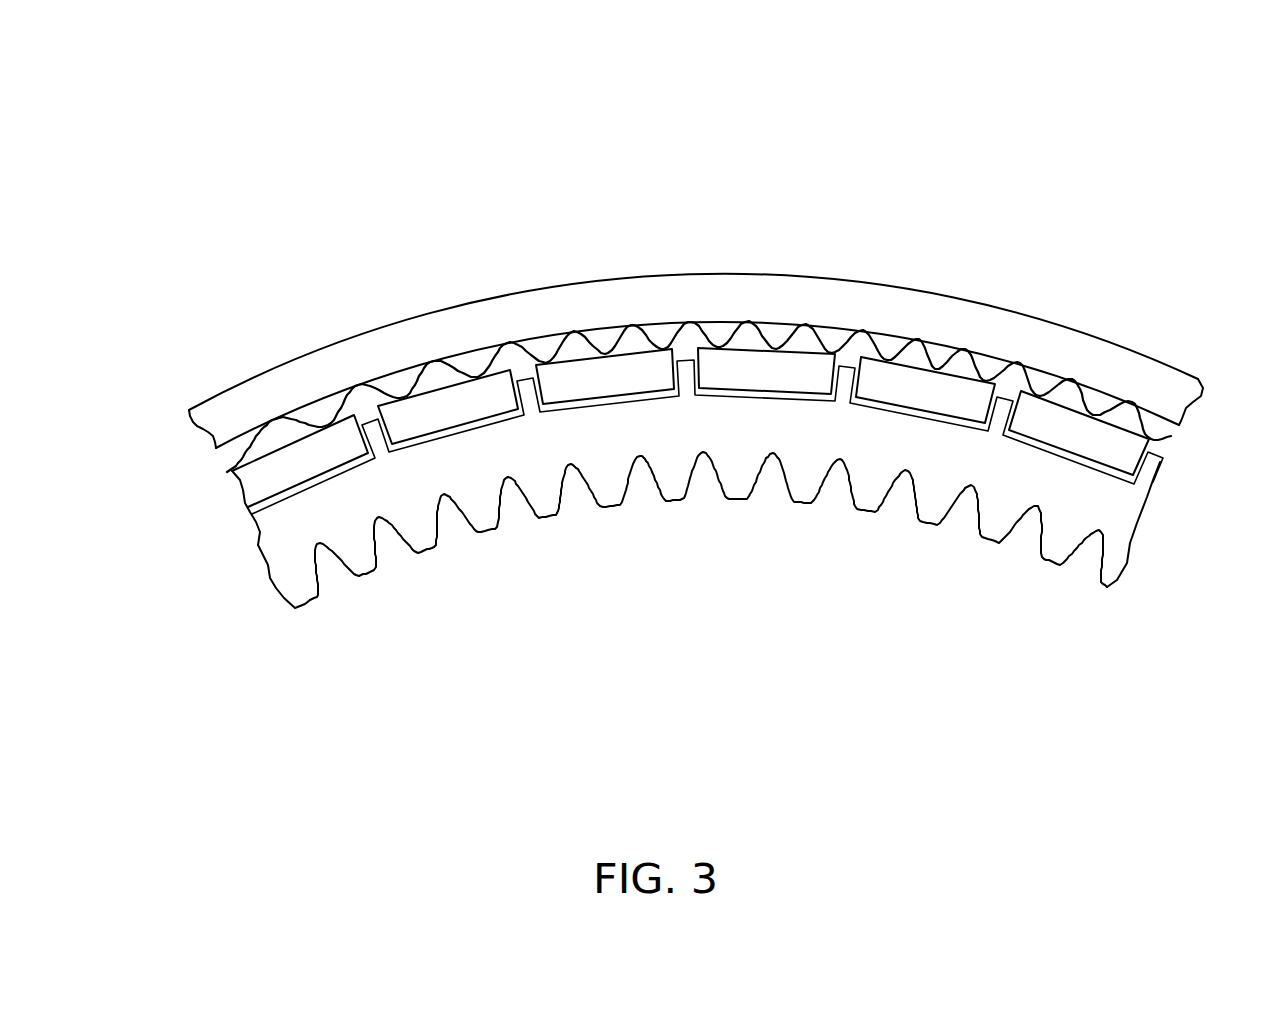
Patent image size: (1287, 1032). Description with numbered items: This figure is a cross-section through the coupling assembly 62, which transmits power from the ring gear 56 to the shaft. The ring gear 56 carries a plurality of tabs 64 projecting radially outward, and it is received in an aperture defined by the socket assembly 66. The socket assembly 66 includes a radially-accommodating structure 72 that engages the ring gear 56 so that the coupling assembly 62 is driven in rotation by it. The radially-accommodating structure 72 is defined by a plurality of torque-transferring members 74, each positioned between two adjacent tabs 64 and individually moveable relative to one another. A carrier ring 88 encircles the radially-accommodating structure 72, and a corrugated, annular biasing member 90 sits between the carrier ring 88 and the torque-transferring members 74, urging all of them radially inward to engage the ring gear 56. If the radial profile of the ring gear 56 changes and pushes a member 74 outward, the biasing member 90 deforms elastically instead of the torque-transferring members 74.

The ring gear 56 is at (542, 507).
The coupling assembly 62 is at (1000, 127).
The tabs 64 is at (687, 383).
The socket assembly 66 is at (646, 226).
The radially-accommodating structure 72 is at (210, 505).
The torque-transferring members 74 is at (435, 403).
The carrier ring 88 is at (1125, 360).
The biasing member 90 is at (312, 402).